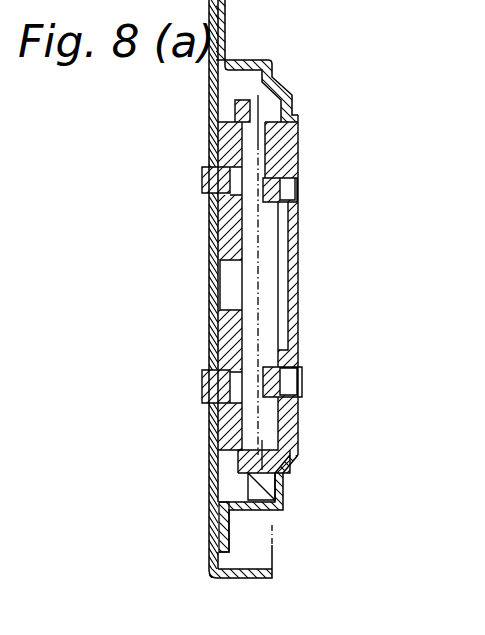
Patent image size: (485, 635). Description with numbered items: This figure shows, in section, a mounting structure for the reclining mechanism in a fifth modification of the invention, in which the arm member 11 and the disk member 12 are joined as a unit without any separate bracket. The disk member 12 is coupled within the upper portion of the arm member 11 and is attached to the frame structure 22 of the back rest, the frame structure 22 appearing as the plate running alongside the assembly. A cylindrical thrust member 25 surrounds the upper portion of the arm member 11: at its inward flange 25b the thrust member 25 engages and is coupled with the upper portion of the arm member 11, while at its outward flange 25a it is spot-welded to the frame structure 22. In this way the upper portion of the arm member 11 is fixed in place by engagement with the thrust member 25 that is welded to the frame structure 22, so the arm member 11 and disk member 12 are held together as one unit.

The arm member 11 is at (300, 238).
The disk member 12 is at (216, 341).
The frame structure 22 is at (208, 123).
The cylindrical thrust member 25 is at (279, 87).
The outward flange 25a is at (220, 530).
The inward flange 25b is at (287, 484).